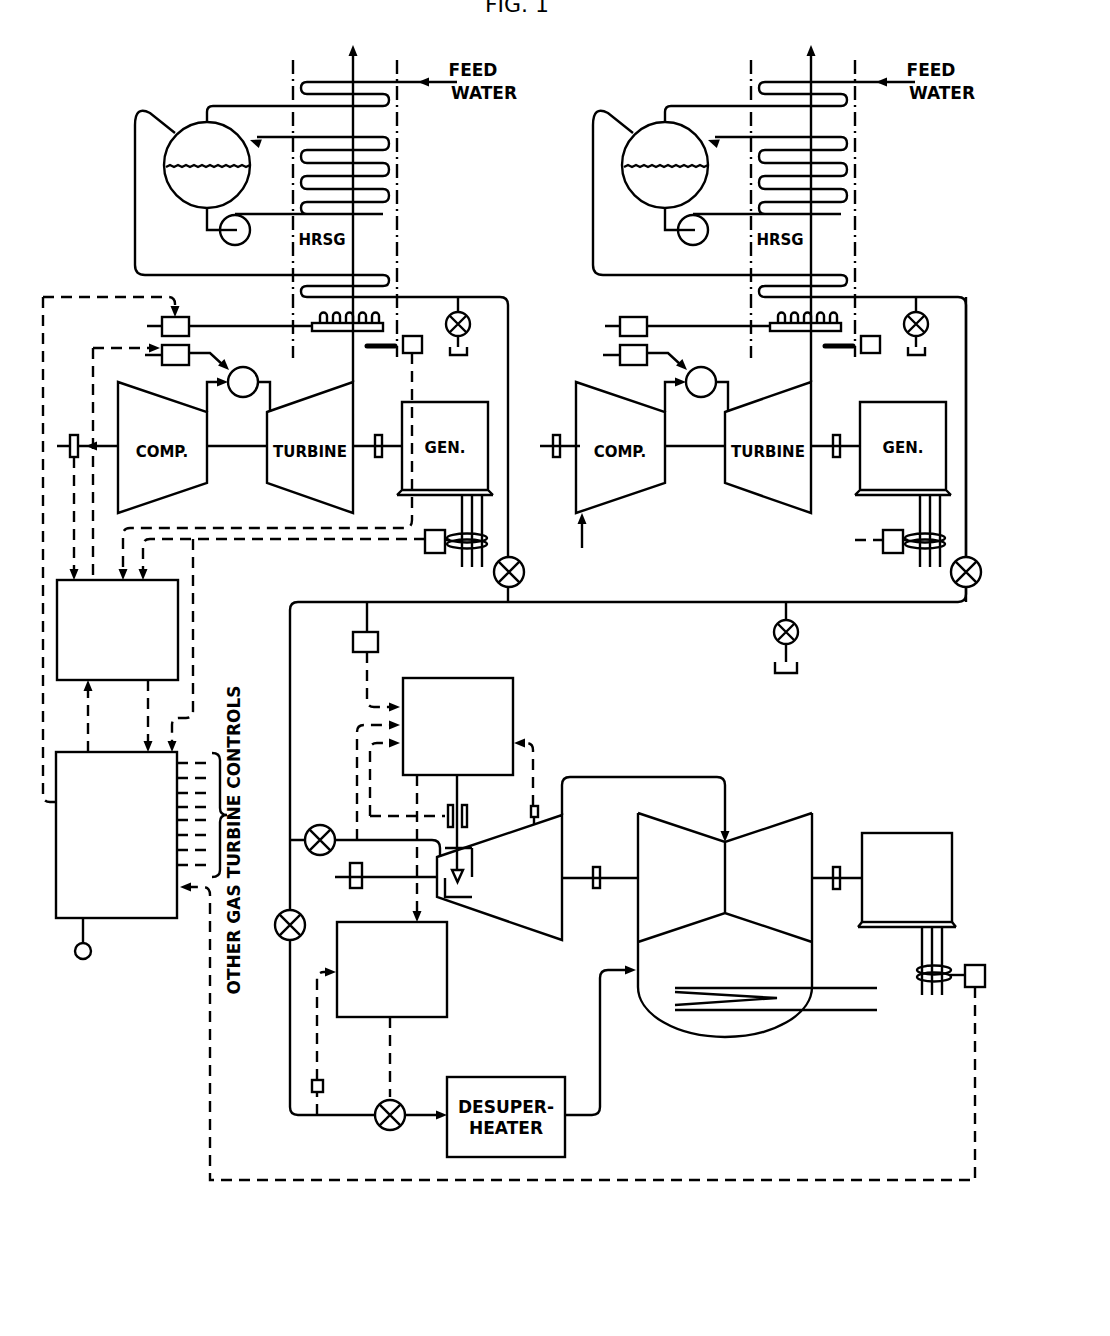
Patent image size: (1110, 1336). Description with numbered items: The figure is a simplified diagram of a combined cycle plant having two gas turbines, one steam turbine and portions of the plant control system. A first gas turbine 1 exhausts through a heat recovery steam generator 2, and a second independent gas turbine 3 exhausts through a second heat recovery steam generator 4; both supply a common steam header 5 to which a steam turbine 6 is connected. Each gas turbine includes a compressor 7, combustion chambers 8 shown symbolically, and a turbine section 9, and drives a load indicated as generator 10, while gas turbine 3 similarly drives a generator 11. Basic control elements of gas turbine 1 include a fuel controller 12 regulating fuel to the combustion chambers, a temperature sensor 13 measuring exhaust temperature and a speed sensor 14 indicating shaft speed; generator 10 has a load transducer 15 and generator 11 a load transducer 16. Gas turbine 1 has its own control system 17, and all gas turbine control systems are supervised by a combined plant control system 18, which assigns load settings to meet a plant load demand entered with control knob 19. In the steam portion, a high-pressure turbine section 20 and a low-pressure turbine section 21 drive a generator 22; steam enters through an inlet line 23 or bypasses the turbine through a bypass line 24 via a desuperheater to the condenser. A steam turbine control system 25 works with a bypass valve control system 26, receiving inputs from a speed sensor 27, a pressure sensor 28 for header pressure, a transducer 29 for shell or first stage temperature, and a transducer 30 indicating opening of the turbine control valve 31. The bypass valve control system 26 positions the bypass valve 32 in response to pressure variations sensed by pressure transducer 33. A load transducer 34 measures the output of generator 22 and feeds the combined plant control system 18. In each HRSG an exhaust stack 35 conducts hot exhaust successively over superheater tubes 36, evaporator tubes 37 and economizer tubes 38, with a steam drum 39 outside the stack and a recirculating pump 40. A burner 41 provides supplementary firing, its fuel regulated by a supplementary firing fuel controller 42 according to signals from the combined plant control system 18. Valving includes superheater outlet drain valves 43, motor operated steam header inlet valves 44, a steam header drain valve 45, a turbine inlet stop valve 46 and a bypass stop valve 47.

The first gas turbine 1 is at (205, 432).
The heat recovery steam generator 2 is at (207, 193).
The second gas turbine 3 is at (675, 457).
The second heat recovery steam generator 4 is at (663, 193).
The common steam header 5 is at (541, 602).
The steam turbine 6 is at (657, 907).
The compressor 7 is at (172, 497).
The combustion chambers 8 is at (252, 369).
The turbine section 9 is at (300, 495).
The generator 10 is at (474, 402).
The generator 11 is at (881, 469).
The fuel controller 12 is at (189, 346).
The temperature sensor 13 is at (412, 336).
The speed sensor 14 is at (74, 435).
The load transducer 15 is at (427, 554).
The load transducer 16 is at (897, 529).
The gas turbine control system 17 is at (160, 580).
The combined plant control system 18 is at (114, 752).
The control knob 19 is at (92, 951).
The high-pressure turbine section 20 is at (565, 818).
The low-pressure turbine section 21 is at (678, 825).
The generator 22 is at (910, 833).
The inlet line 23 is at (365, 840).
The bypass line 24 is at (305, 877).
The steam turbine control system 25 is at (514, 700).
The bypass valve control system 26 is at (449, 976).
The speed sensor 27 is at (364, 883).
The pressure sensor 28 is at (353, 642).
The transducer 29 is at (531, 812).
The transducer 30 is at (468, 816).
The turbine control valve 31 is at (462, 886).
The bypass valve 32 is at (400, 1102).
The pressure transducer 33 is at (323, 1083).
The load transducer 34 is at (974, 965).
The exhaust stack 35 is at (398, 238).
The superheater tubes 36 is at (390, 278).
The evaporator tubes 37 is at (390, 167).
The economizer tubes 38 is at (390, 102).
The steam drum 39 is at (181, 198).
The recirculating pump 40 is at (246, 241).
The burner 41 is at (316, 317).
The supplementary firing fuel controller 42 is at (190, 318).
The superheater outlet drain valves 43 is at (469, 321).
The motor operated steam header inlet valves 44 is at (514, 559).
The steam header drain valve 45 is at (799, 633).
The turbine inlet stop valve 46 is at (312, 852).
The bypass stop valve 47 is at (300, 915).